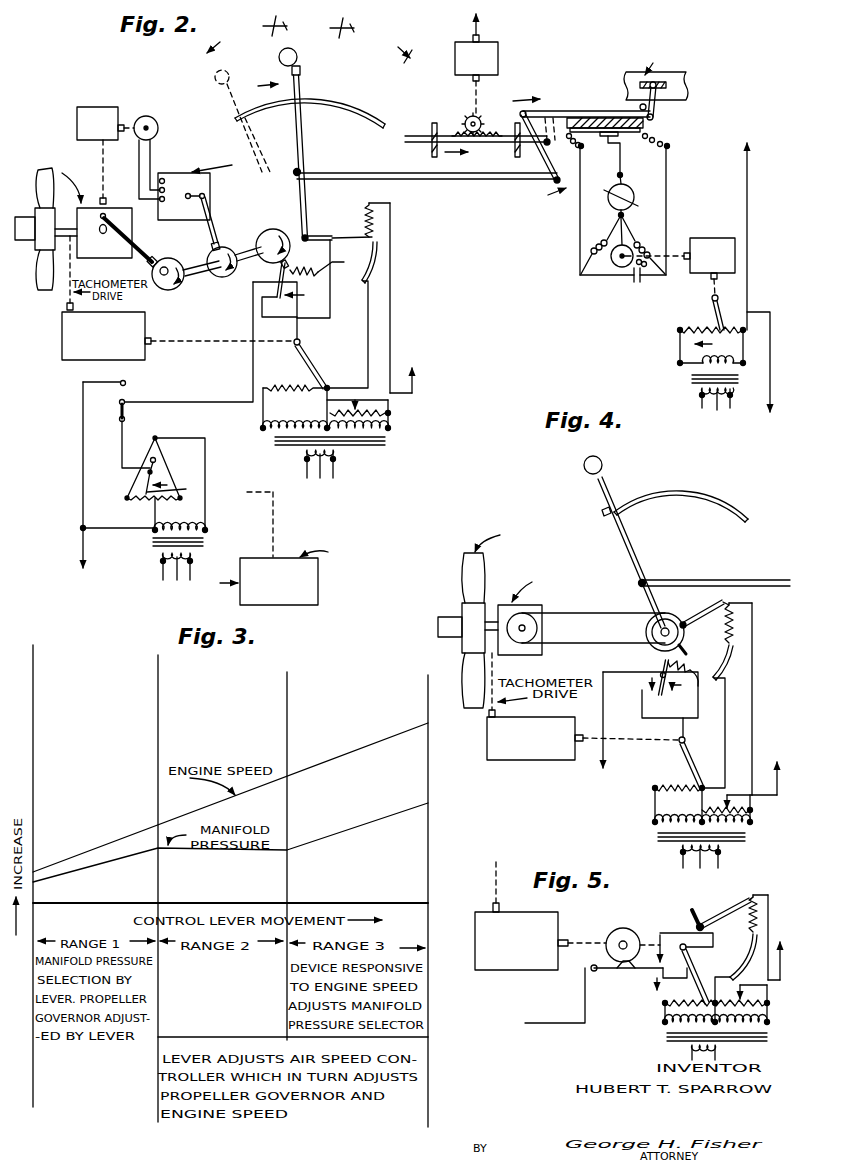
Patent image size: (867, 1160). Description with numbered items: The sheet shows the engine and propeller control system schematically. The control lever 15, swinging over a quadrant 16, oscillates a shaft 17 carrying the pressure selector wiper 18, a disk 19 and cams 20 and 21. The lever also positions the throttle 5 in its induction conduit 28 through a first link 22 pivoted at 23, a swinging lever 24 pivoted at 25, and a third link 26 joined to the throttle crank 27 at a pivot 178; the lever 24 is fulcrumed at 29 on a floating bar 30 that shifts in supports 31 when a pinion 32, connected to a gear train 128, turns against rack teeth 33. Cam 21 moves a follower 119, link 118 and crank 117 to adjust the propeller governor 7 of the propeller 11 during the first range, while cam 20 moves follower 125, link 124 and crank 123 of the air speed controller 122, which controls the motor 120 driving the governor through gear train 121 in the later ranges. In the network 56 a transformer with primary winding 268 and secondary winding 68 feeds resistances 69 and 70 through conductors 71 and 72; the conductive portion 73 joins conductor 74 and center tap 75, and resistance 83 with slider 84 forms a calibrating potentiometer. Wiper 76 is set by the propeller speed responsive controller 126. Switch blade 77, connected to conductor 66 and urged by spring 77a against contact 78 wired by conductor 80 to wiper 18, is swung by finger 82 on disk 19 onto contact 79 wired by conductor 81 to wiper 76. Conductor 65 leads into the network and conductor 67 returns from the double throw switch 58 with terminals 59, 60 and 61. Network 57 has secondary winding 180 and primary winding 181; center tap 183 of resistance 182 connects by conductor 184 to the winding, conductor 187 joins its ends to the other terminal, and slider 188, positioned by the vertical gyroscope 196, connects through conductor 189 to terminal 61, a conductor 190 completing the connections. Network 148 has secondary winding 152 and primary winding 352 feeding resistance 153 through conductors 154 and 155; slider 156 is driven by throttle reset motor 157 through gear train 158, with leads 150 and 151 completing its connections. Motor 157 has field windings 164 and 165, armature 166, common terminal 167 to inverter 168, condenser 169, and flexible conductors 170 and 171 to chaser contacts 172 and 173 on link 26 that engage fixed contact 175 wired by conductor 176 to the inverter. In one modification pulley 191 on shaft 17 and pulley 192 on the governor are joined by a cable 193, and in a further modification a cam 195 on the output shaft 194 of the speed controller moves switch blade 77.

In FIG. 2, the throttle 5 is at (692, 84).
In FIG. 2, the propeller governor 7 is at (122, 210).
In FIG. 4, the propeller governor 7 is at (502, 603).
In FIG. 2, the propeller 11 is at (38, 180).
In FIG. 4, the propeller 11 is at (464, 563).
In FIG. 2, the control lever 15 is at (296, 140).
In FIG. 4, the control lever 15 is at (630, 538).
In FIG. 5, the control lever 15 is at (691, 910).
In FIG. 2, the quadrant 16 is at (343, 110).
In FIG. 4, the quadrant 16 is at (671, 499).
In FIG. 2, the shaft 17 is at (251, 260).
In FIG. 4, the shaft 17 is at (660, 632).
In FIG. 2, the pressure selector wiper 18 is at (319, 233).
In FIG. 4, the pressure selector wiper 18 is at (717, 609).
In FIG. 5, the pressure selector wiper 18 is at (733, 908).
In FIG. 2, the disk 19 is at (274, 229).
In FIG. 4, the disk 19 is at (662, 650).
In FIG. 2, the cam 20 is at (218, 278).
In FIG. 2, the cam 21 is at (170, 291).
In FIG. 2, the first link 22 is at (441, 180).
In FIG. 4, the first link 22 is at (744, 577).
In FIG. 2, the pivot 23 is at (300, 170).
In FIG. 2, the second swinging link 24 is at (541, 156).
In FIG. 2, the pivot 25 is at (557, 185).
In FIG. 2, the third link 26 is at (562, 110).
In FIG. 2, the crank 27 is at (519, 114).
In FIG. 2, the induction system conduit 28 is at (623, 85).
In FIG. 2, the fulcrum 29 is at (557, 146).
In FIG. 2, the rack 30 is at (500, 144).
In FIG. 2, the supports 31 is at (433, 123).
In FIG. 2, the pinion 32 is at (480, 117).
In FIG. 2, the rack teeth 33 is at (452, 131).
In FIG. 2, the network 56 is at (394, 379).
In FIG. 4, the network 56 is at (755, 766).
In FIG. 2, the network 57 is at (210, 542).
In FIG. 2, the single pole double throw switch 58 is at (113, 407).
In FIG. 2, the center blade terminal 59 is at (119, 401).
In FIG. 2, the blade terminal 60 is at (127, 382).
In FIG. 2, the blade terminal 61 is at (120, 421).
In FIG. 2, the conductor 65 is at (414, 392).
In FIG. 4, the conductor 65 is at (775, 793).
In FIG. 5, the conductor 65 is at (769, 1000).
In FIG. 2, the conductor 66 is at (252, 377).
In FIG. 4, the conductor 66 is at (605, 752).
In FIG. 2, the conductor 67 is at (85, 549).
In FIG. 2, the transformer secondary winding 68 is at (300, 426).
In FIG. 4, the transformer secondary winding 68 is at (655, 831).
In FIG. 5, the transformer secondary winding 68 is at (716, 1028).
In FIG. 2, the slidewire resistance 69 is at (365, 212).
In FIG. 4, the slidewire resistance 69 is at (738, 621).
In FIG. 5, the slidewire resistance 69 is at (755, 895).
In FIG. 2, the slidewire resistance 70 is at (288, 386).
In FIG. 4, the slidewire resistance 70 is at (676, 786).
In FIG. 5, the slidewire resistance 70 is at (663, 1006).
In FIG. 2, the conductor 71 is at (392, 310).
In FIG. 4, the conductor 71 is at (754, 700).
In FIG. 5, the conductor 71 is at (769, 905).
In FIG. 2, the conductor 72 is at (294, 411).
In FIG. 2, the conductive portion 73 is at (378, 262).
In FIG. 4, the conductive portion 73 is at (731, 660).
In FIG. 5, the conductive portion 73 is at (738, 960).
In FIG. 2, the conductor 74 is at (366, 345).
In FIG. 4, the conductor 74 is at (713, 733).
In FIG. 5, the conductor 74 is at (722, 990).
In FIG. 2, the center tap 75 is at (323, 425).
In FIG. 2, the wiper 76 is at (314, 368).
In FIG. 4, the wiper 76 is at (692, 757).
In FIG. 5, the wiper 76 is at (695, 972).
In FIG. 2, the swinging blade 77 is at (276, 283).
In FIG. 4, the swinging blade 77 is at (658, 680).
In FIG. 5, the swinging blade 77 is at (658, 938).
In FIG. 2, the biasing spring 77a is at (343, 260).
In FIG. 4, the biasing spring 77a is at (698, 686).
In FIG. 2, the contact 78 is at (262, 310).
In FIG. 4, the contact 78 is at (650, 694).
In FIG. 5, the contact 78 is at (674, 929).
In FIG. 2, the contact 79 is at (304, 292).
In FIG. 4, the contact 79 is at (672, 694).
In FIG. 5, the contact 79 is at (655, 988).
In FIG. 2, the conductor 80 is at (332, 303).
In FIG. 4, the conductor 80 is at (650, 704).
In FIG. 5, the conductor 80 is at (700, 940).
In FIG. 2, the conductor 81 is at (300, 334).
In FIG. 4, the conductor 81 is at (682, 740).
In FIG. 5, the conductor 81 is at (683, 951).
In FIG. 2, the finger 82 is at (300, 269).
In FIG. 4, the finger 82 is at (679, 666).
In FIG. 2, the slidewire resistance 83 is at (390, 418).
In FIG. 4, the slidewire resistance 83 is at (727, 804).
In FIG. 2, the slider 84 is at (357, 406).
In FIG. 2, the crank 117 is at (102, 234).
In FIG. 2, the link 118 is at (137, 247).
In FIG. 2, the follower 119 is at (161, 263).
In FIG. 2, the reversible electric motor 120 is at (150, 117).
In FIG. 2, the gear train 121 is at (96, 107).
In FIG. 2, the air speed controller 122 is at (210, 186).
In FIG. 2, the crank 123 is at (190, 199).
In FIG. 2, the link 124 is at (218, 222).
In FIG. 2, the follower 125 is at (222, 246).
In FIG. 2, the propeller speed responsive controller 126 is at (147, 323).
In FIG. 4, the propeller speed responsive controller 126 is at (520, 760).
In FIG. 5, the propeller speed responsive controller 126 is at (558, 915).
In FIG. 2, the gear train 128 is at (495, 43).
In FIG. 2, the network 148 is at (690, 378).
In FIG. 2, the lead 150 is at (746, 170).
In FIG. 2, the lead 151 is at (762, 311).
In FIG. 2, the transformer secondary winding 152 is at (715, 348).
In FIG. 2, the slidewire resistance 153 is at (681, 329).
In FIG. 2, the conductor 154 is at (679, 346).
In FIG. 2, the conductor 155 is at (745, 340).
In FIG. 2, the slider 156 is at (714, 318).
In FIG. 2, the throttle reset motor 157 is at (607, 267).
In FIG. 2, the gear train 158 is at (733, 238).
In FIG. 2, the field winding 164 is at (591, 249).
In FIG. 2, the field winding 165 is at (653, 243).
In FIG. 2, the armature 166 is at (647, 270).
In FIG. 2, the common terminal 167 is at (625, 217).
In FIG. 2, the inverter 168 is at (611, 205).
In FIG. 2, the condenser 169 is at (632, 280).
In FIG. 2, the flexible conductor 170 is at (579, 234).
In FIG. 2, the flexible conductor 171 is at (668, 190).
In FIG. 2, the chaser contact 172 is at (605, 134).
In FIG. 2, the chaser contact 173 is at (628, 136).
In FIG. 2, the fixed center contact 175 is at (608, 147).
In FIG. 2, the conductor 176 is at (623, 176).
In FIG. 2, the pivot 178 is at (640, 107).
In FIG. 2, the secondary winding 180 is at (193, 527).
In FIG. 2, the primary winding 181 is at (179, 575).
In FIG. 2, the slidewire resistance 182 is at (186, 489).
In FIG. 2, the center tap 183 is at (140, 502).
In FIG. 2, the conductor 184 is at (154, 528).
In FIG. 2, the conductor 187 is at (207, 470).
In FIG. 2, the slider 188 is at (145, 476).
In FIG. 2, the conductor 189 is at (121, 447).
In FIG. 2, the lead 190 is at (139, 532).
In FIG. 4, the pulley 191 is at (668, 617).
In FIG. 4, the pulley 192 is at (538, 629).
In FIG. 4, the cable 193 is at (620, 618).
In FIG. 5, the output shaft 194 is at (592, 939).
In FIG. 5, the cam 195 is at (623, 928).
In FIG. 2, the vertical gyroscope 196 is at (216, 606).
In FIG. 2, the primary winding 268 is at (320, 473).
In FIG. 4, the primary winding 268 is at (701, 864).
In FIG. 5, the primary winding 268 is at (690, 1043).
In FIG. 2, the primary winding 352 is at (715, 411).